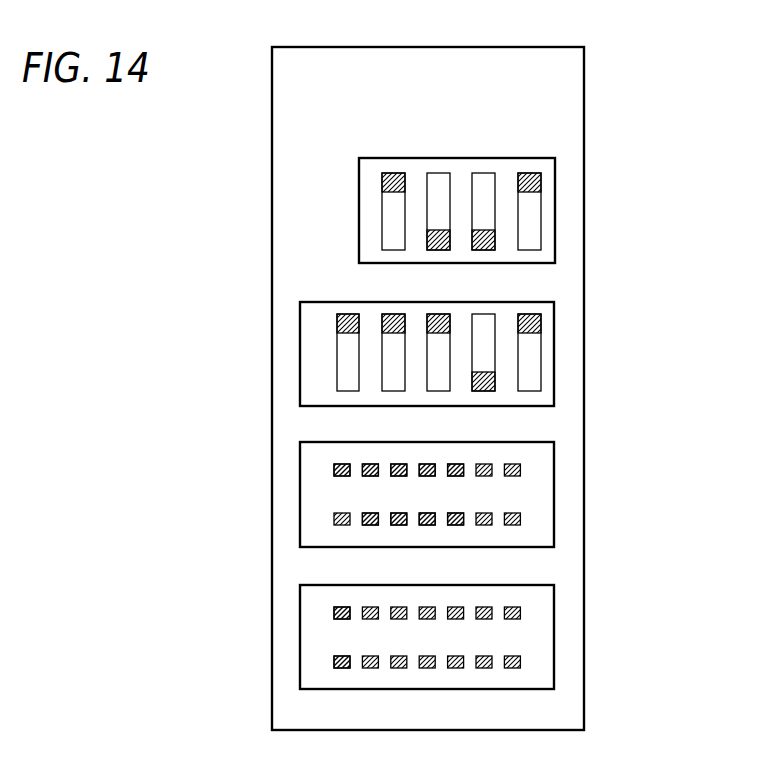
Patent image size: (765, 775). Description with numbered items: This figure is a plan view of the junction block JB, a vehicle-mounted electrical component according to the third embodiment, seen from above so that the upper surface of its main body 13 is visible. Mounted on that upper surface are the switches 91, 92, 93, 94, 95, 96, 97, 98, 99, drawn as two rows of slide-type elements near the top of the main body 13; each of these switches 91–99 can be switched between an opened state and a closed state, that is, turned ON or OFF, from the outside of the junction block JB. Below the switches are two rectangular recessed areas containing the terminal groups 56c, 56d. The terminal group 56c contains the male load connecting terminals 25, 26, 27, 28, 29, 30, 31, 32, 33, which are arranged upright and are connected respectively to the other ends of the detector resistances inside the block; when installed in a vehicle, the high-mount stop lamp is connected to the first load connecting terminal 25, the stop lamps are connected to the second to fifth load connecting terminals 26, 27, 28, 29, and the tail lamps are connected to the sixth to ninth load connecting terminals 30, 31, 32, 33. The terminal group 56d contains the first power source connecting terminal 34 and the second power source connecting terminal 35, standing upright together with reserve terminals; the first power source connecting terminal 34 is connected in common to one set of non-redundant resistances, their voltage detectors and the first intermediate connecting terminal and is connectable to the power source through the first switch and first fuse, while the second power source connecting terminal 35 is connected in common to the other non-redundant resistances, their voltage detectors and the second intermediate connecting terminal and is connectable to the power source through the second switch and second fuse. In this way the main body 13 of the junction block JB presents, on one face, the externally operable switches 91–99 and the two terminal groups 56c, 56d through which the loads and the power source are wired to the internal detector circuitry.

The junction block JB is at (607, 114).
The main body 13 is at (272, 125).
The switch 91 is at (341, 313).
The switch 92 is at (386, 313).
The switch 93 is at (431, 313).
The switch 94 is at (483, 313).
The switch 95 is at (522, 313).
The switch 96 is at (387, 172).
The switch 97 is at (432, 172).
The switch 98 is at (477, 172).
The switch 99 is at (523, 172).
The first load connecting terminal 25 is at (341, 463).
The second load connecting terminal 26 is at (370, 476).
The third load connecting terminal 27 is at (369, 526).
The fourth load connecting terminal 28 is at (397, 463).
The fifth load connecting terminal 29 is at (396, 526).
The sixth load connecting terminal 30 is at (426, 476).
The seventh load connecting terminal 31 is at (423, 526).
The eighth load connecting terminal 32 is at (453, 463).
The ninth load connecting terminal 33 is at (452, 526).
The first power source connecting terminal 34 is at (342, 620).
The second power source connecting terminal 35 is at (342, 669).
The terminal group 56c is at (318, 492).
The terminal group 56d is at (318, 633).